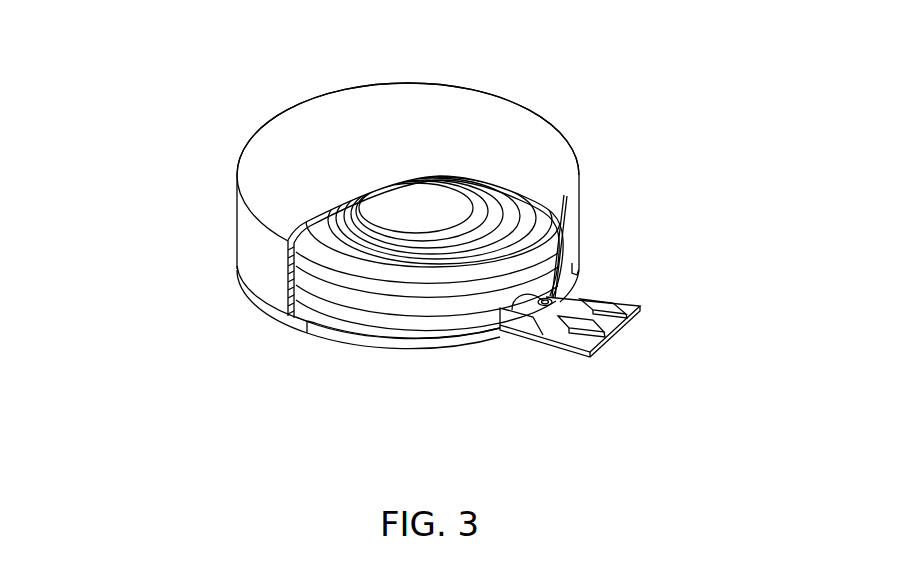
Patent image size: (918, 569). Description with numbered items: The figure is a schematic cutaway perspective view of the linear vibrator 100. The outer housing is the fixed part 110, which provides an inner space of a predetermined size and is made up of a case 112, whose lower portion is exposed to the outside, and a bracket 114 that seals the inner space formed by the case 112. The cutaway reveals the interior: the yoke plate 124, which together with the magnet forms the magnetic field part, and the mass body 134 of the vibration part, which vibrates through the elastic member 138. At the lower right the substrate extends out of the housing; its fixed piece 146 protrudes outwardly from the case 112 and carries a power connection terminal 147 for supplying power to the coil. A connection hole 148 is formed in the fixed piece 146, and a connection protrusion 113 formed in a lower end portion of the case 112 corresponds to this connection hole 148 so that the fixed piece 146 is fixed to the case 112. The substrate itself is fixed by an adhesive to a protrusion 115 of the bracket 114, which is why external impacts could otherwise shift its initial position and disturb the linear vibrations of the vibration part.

The linear vibrator 100 is at (252, 31).
The fixed part 110 is at (153, 251).
The case 112 is at (248, 263).
The bracket 114 is at (252, 292).
The connection protrusion 113 is at (552, 300).
The protrusion 115 is at (558, 345).
The yoke plate 124 is at (443, 200).
The mass body 134 is at (380, 310).
The elastic member 138 is at (526, 214).
The fixed piece 146 is at (605, 328).
The power connection terminal 147 is at (608, 307).
The connection hole 148 is at (512, 310).